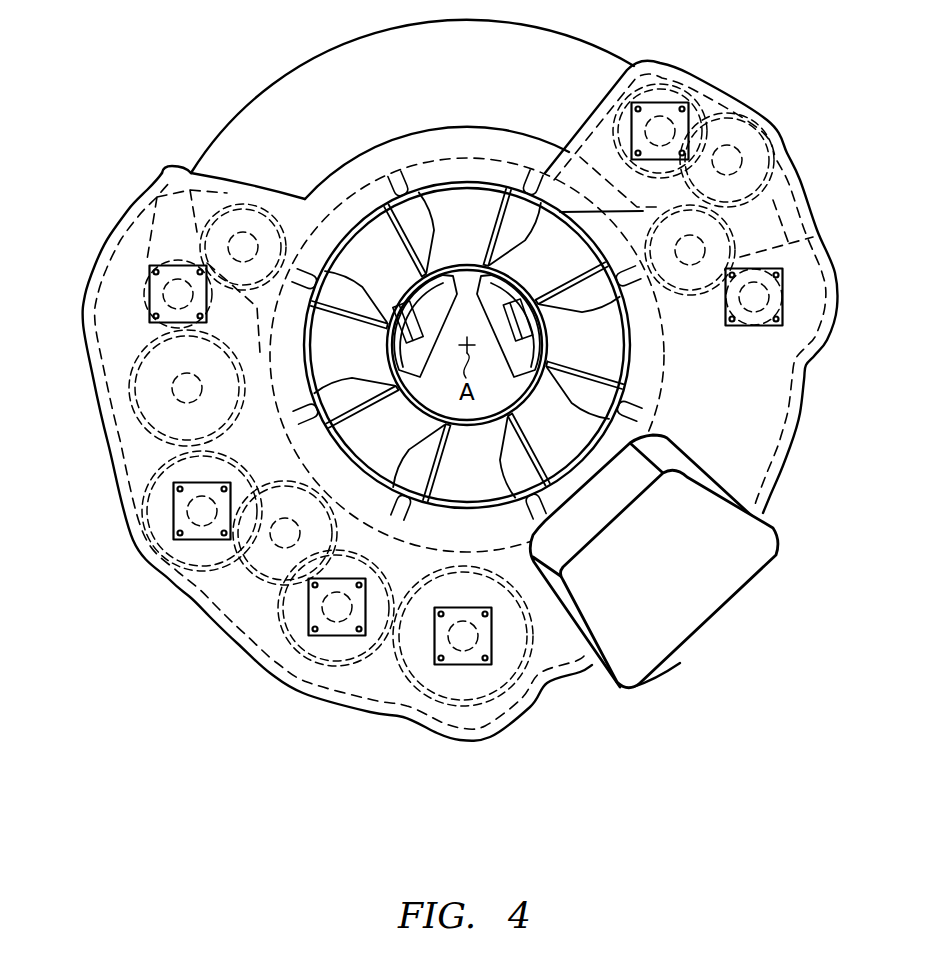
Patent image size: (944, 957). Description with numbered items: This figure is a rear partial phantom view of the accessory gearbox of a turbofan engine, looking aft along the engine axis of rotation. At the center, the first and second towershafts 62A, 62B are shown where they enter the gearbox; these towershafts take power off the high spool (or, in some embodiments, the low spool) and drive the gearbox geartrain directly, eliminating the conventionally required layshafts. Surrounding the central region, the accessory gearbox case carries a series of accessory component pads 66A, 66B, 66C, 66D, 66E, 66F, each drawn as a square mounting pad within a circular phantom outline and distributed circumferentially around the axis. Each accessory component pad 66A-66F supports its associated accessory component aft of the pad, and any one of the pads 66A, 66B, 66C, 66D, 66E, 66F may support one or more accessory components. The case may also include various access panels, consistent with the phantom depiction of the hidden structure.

The first towershaft 62A is at (393, 332).
The second towershaft 62B is at (543, 327).
The accessory component pad 66A is at (150, 290).
The accessory component pad 66B is at (173, 511).
The accessory component pad 66C is at (334, 637).
The accessory component pad 66D is at (457, 665).
The accessory component pad 66E is at (783, 273).
The accessory component pad 66F is at (662, 103).